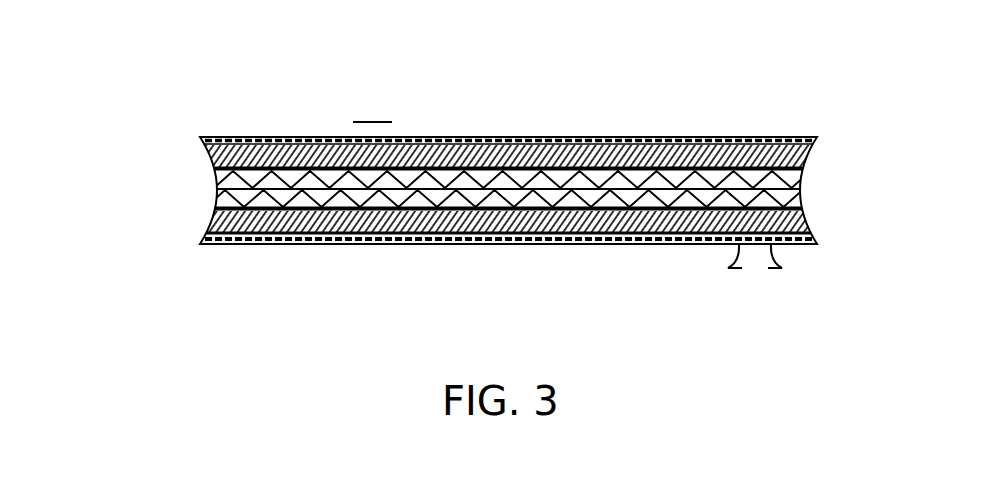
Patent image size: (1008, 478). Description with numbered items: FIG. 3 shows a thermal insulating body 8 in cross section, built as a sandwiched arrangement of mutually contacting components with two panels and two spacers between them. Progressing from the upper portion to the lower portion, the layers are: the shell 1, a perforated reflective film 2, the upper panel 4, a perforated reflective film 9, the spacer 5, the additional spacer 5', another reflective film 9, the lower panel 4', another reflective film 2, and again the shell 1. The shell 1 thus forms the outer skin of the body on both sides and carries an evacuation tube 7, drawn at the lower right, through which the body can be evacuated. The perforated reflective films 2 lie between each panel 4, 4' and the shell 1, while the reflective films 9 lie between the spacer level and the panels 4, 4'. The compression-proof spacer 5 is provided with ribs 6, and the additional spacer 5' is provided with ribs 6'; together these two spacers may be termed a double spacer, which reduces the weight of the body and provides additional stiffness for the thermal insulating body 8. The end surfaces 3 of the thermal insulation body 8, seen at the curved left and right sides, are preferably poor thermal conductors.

The shell 1 is at (530, 138).
The perforated reflective film 2 is at (645, 138).
The end surfaces 3 is at (539, 251).
The panel 4 is at (457, 126).
The panel 4' is at (449, 191).
The spacer 5 is at (512, 256).
The additional spacer 5' is at (504, 252).
The ribs 6 is at (510, 109).
The ribs 6' is at (510, 270).
The evacuation tube 7 is at (760, 262).
The thermal insulating body 8 is at (375, 122).
The perforated reflective film 9 is at (502, 242).